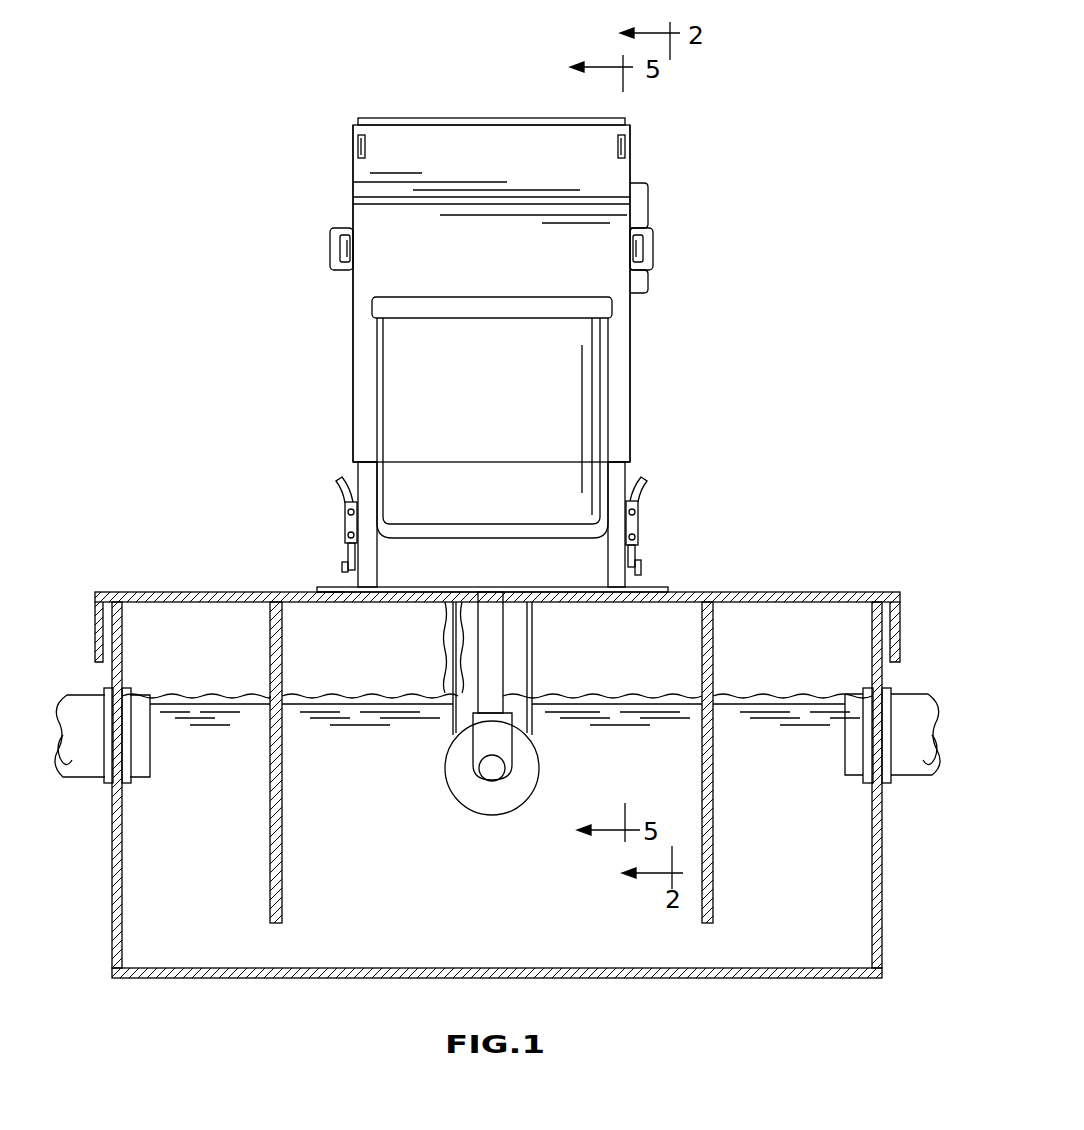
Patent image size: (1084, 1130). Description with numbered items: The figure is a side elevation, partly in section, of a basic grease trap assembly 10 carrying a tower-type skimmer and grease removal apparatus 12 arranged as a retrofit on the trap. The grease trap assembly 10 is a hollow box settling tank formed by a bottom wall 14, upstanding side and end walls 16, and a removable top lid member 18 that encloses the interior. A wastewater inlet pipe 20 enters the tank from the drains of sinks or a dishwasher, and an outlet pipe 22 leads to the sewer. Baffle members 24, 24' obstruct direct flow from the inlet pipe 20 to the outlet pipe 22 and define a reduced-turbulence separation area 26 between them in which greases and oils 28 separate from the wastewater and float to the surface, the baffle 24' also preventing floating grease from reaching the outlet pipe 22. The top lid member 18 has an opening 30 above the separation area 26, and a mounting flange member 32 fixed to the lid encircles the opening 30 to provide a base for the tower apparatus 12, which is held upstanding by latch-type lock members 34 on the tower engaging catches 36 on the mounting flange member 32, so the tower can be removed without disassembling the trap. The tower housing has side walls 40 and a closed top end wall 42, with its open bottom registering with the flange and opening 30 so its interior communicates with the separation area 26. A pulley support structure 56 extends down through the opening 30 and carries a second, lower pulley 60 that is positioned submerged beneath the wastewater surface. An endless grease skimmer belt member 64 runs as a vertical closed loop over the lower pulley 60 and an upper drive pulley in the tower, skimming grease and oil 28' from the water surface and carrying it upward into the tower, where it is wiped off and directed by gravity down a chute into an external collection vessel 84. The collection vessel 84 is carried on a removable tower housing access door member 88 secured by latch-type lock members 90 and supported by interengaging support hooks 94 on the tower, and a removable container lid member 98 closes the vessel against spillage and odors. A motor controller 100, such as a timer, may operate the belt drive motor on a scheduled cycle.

The grease trap assembly 10 is at (822, 565).
The tower-type skimmer and grease removal apparatus 12 is at (257, 190).
The bottom wall 14 is at (262, 979).
The side and opposite end walls 16 is at (217, 632).
The top lid member 18 is at (168, 592).
The wastewater inlet pipe 20 is at (80, 780).
The outlet pipe 22 is at (912, 778).
The baffle member 24 is at (241, 762).
The baffle member 24' is at (747, 762).
The separation or settling area 26 is at (380, 775).
The greases and oils 28 is at (497, 679).
The skimmed grease and oil 28' is at (415, 647).
The opening 30 is at (418, 602).
The mounting flange member 32 is at (332, 588).
The latch-type lock members 34 is at (345, 522).
The catches 36 is at (641, 565).
The side walls 40 is at (617, 477).
The closed top end wall 42 is at (492, 118).
The pulley support structure 56 is at (503, 633).
The second, lower submerged pulley 60 is at (490, 815).
The endless grease skimmer belt member 64 is at (532, 670).
The external collection vessel 84 is at (425, 330).
The tower housing access door member 88 is at (425, 157).
The latch-type lock members 90 is at (330, 249).
The support hooks 94 is at (358, 147).
The removable container lid member 98 is at (492, 298).
The motor controller 100 is at (649, 205).